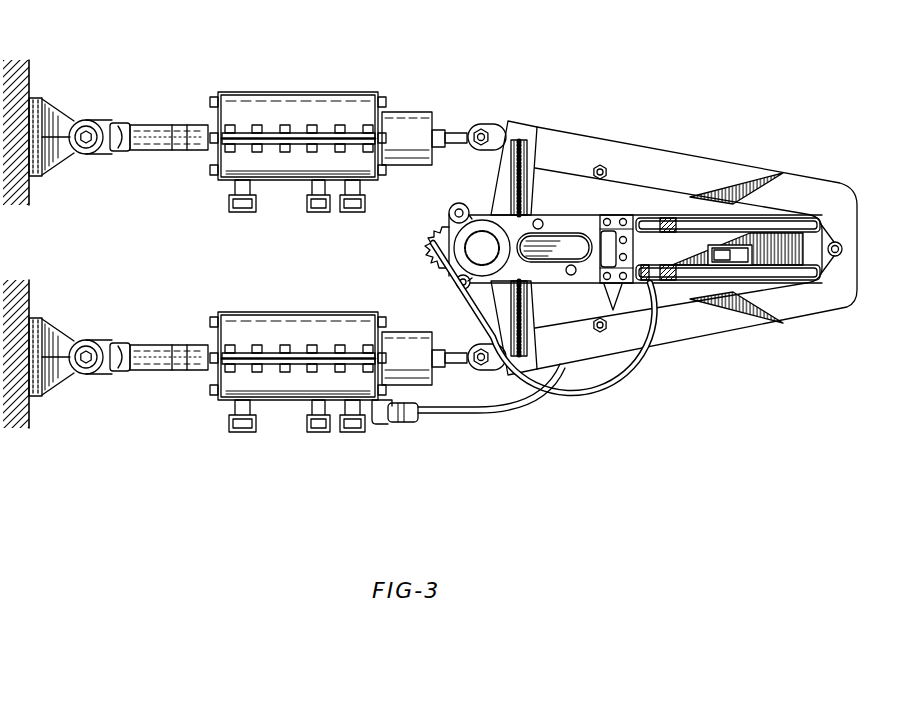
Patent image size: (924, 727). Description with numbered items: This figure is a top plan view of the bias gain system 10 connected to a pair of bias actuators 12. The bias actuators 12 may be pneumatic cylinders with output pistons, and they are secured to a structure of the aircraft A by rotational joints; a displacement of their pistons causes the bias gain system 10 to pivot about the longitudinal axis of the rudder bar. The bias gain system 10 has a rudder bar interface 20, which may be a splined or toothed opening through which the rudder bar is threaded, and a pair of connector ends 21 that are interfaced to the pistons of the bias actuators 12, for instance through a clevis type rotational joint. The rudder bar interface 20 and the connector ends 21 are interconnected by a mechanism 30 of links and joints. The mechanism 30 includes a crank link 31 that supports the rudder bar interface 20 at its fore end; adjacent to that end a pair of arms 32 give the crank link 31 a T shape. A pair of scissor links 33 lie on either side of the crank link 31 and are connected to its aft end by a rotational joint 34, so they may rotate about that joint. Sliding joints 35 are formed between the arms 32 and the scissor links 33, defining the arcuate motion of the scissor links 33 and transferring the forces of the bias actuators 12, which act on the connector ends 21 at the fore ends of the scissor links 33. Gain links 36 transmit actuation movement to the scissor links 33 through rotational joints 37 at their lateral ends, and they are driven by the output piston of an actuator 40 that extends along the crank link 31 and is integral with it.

The aircraft structure A is at (30, 84).
The bias gain system 10 is at (698, 138).
The bias actuators 12 is at (233, 90).
The rudder bar interface 20 is at (466, 240).
The connector ends 21 is at (484, 123).
The mechanism 30 is at (760, 158).
The crank link 31 is at (665, 226).
The arms 32 is at (498, 190).
The scissor links 33 is at (570, 158).
The rotational joint 34 is at (843, 247).
The sliding joints 35 is at (535, 122).
The gain links 36 is at (634, 214).
The rotational joints 37 is at (606, 167).
The actuator 40 is at (736, 265).